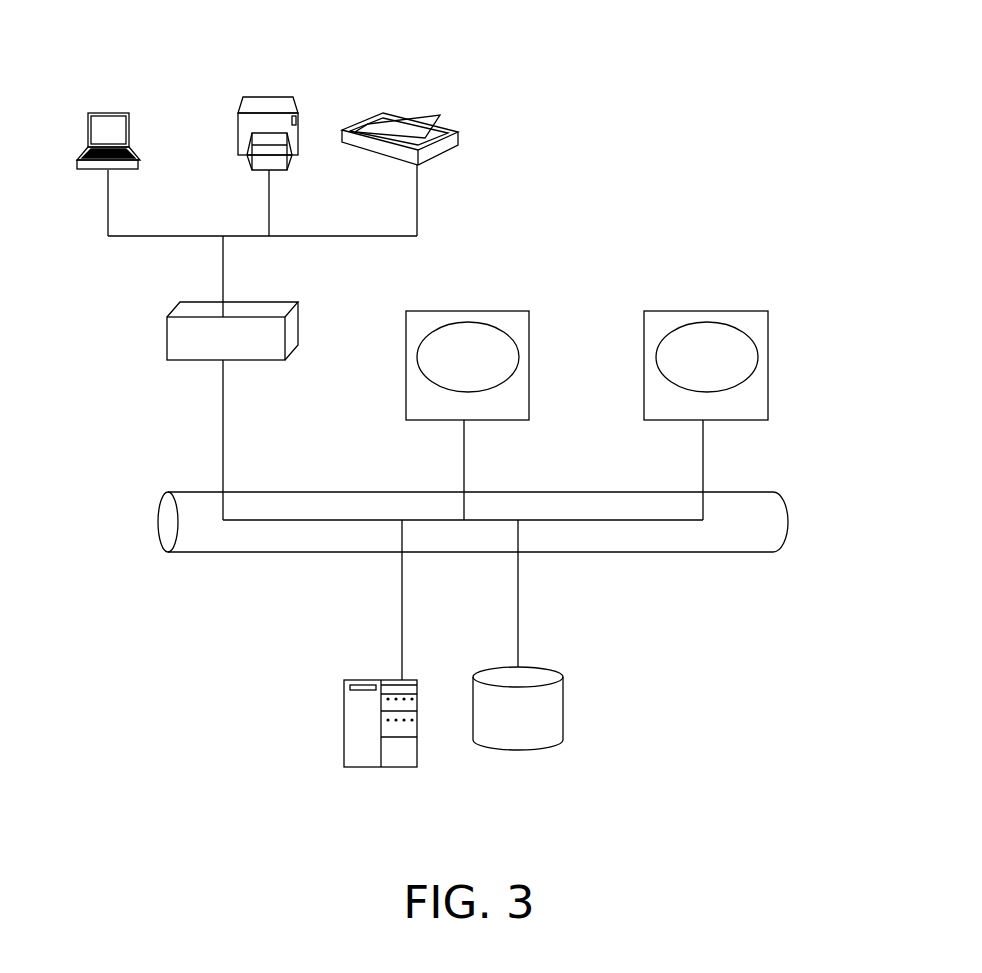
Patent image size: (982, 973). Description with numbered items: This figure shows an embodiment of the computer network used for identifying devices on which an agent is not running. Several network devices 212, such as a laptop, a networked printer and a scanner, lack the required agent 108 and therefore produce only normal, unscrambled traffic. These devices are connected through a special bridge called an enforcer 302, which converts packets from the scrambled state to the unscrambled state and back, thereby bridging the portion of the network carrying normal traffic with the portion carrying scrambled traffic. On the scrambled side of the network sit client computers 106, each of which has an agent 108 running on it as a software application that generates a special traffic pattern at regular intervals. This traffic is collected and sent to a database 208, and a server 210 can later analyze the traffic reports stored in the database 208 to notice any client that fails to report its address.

The network devices 212 is at (107, 113).
The enforcer 302 is at (167, 333).
The client computer 106 is at (485, 311).
The agent 108 is at (517, 330).
The server 210 is at (398, 770).
The database 208 is at (568, 717).